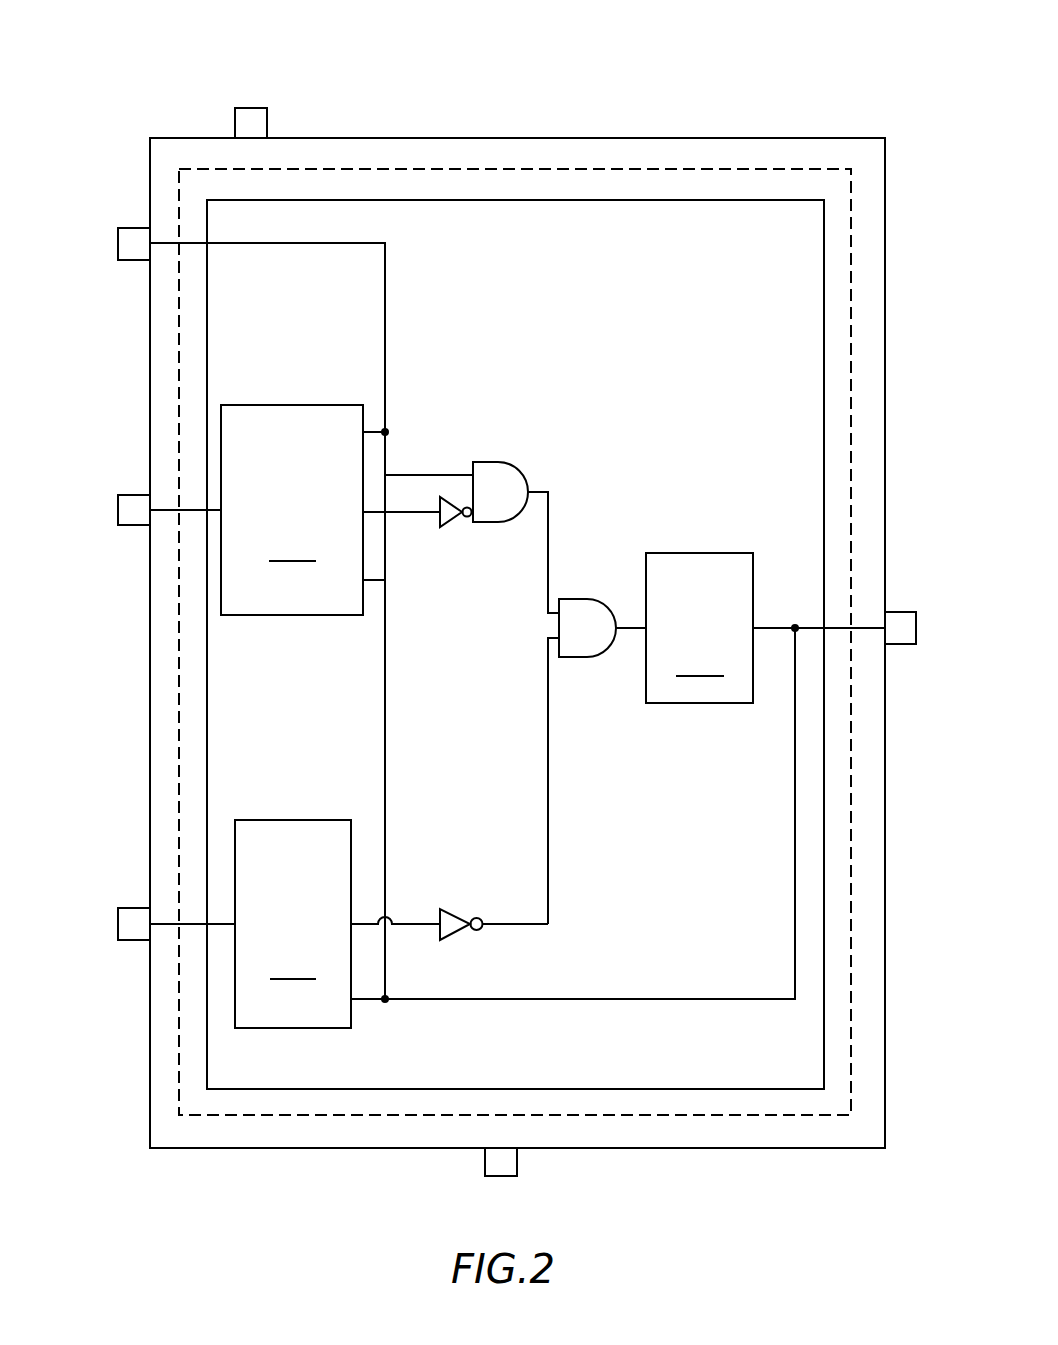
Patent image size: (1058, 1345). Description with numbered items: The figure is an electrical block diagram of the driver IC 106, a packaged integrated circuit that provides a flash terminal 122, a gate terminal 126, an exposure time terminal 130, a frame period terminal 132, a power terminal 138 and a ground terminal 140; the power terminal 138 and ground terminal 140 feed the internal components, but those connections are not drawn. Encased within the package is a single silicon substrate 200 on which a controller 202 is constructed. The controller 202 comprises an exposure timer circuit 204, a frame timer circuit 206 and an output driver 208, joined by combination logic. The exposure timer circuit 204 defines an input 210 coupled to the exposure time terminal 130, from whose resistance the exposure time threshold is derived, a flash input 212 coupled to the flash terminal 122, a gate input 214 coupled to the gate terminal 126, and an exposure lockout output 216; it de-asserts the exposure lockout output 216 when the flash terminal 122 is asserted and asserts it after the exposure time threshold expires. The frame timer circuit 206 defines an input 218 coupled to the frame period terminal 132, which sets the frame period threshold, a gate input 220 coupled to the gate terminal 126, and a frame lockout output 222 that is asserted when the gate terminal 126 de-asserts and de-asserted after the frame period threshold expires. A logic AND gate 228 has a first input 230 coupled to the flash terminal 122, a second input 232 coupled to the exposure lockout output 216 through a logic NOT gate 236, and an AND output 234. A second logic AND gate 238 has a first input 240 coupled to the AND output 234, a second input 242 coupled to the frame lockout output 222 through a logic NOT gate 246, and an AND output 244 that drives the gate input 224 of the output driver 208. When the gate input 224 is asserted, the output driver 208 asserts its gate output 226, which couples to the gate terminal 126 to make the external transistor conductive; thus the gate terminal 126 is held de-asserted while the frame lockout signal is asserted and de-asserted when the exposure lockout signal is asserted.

The driver IC 106 is at (136, 82).
The power terminal 138 is at (249, 108).
The silicon substrate 200 is at (348, 169).
The controller 202 is at (606, 282).
The flash terminal 122 is at (118, 242).
The exposure time terminal 130 is at (118, 510).
The input 210 is at (221, 512).
The flash input 212 is at (366, 432).
The gate input 214 is at (368, 583).
The exposure lockout output 216 is at (367, 513).
The exposure timer circuit 204 is at (292, 510).
The first input 230 is at (473, 463).
The logic AND gate 228 is at (512, 463).
The second input 232 is at (469, 516).
The AND output 234 is at (549, 491).
The logic NOT gate 236 is at (447, 527).
The gate input 224 is at (645, 622).
The gate output 226 is at (755, 626).
The gate terminal 126 is at (900, 612).
The first input 240 is at (557, 609).
The second input 242 is at (557, 640).
The AND output 244 is at (612, 630).
The logic AND gate 238 is at (570, 657).
The output driver 208 is at (699, 628).
The frame period terminal 132 is at (118, 924).
The input 218 is at (235, 926).
The frame timer circuit 206 is at (293, 924).
The frame lockout output 222 is at (385, 917).
The logic NOT gate 246 is at (452, 935).
The gate input 220 is at (353, 1004).
The ground terminal 140 is at (500, 1176).